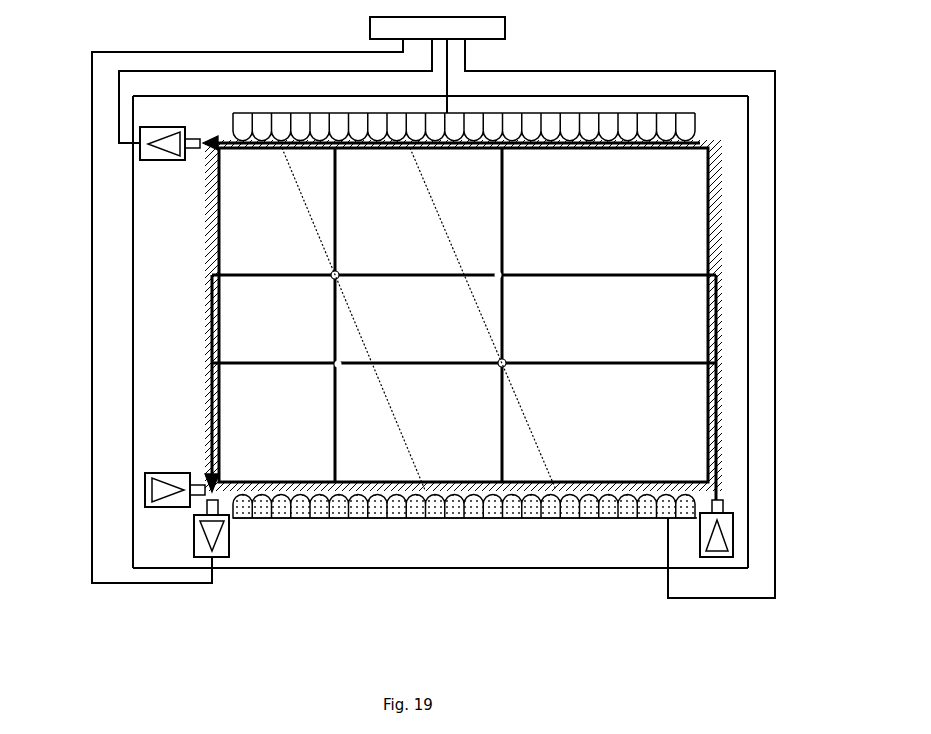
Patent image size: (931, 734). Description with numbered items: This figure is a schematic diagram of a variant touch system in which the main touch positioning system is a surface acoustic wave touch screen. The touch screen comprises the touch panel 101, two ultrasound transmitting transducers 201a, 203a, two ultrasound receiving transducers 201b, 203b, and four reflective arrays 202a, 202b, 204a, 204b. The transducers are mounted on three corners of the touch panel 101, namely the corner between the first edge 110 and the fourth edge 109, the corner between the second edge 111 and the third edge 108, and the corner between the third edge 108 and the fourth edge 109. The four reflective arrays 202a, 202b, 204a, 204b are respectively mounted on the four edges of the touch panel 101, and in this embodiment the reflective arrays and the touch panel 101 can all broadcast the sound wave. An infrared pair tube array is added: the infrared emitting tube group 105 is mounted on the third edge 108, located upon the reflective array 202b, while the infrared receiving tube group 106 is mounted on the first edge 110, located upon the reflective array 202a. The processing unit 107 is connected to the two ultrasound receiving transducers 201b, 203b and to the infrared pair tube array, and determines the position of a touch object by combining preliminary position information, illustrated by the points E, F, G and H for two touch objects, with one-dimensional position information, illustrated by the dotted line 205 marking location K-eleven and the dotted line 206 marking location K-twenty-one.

The touch panel 101 is at (248, 401).
The infrared emitting tube group 105 is at (322, 518).
The infrared receiving tube group 106 is at (588, 113).
The processing unit 107 is at (437, 28).
The third edge 108 is at (615, 568).
The fourth edge 109 is at (133, 352).
The first edge 110 is at (222, 96).
The second edge 111 is at (748, 381).
The ultrasound transmitting transducer 201a is at (145, 488).
The ultrasound receiving transducer 201b is at (157, 127).
The reflective array 202a is at (700, 140).
The reflective array 202b is at (716, 488).
The ultrasound transmitting transducer 203a is at (718, 557).
The ultrasound receiving transducer 203b is at (219, 557).
The reflective array 204a is at (712, 210).
The reflective array 204b is at (207, 261).
The dotted line 205 is at (529, 425).
The dotted line 206 is at (398, 425).